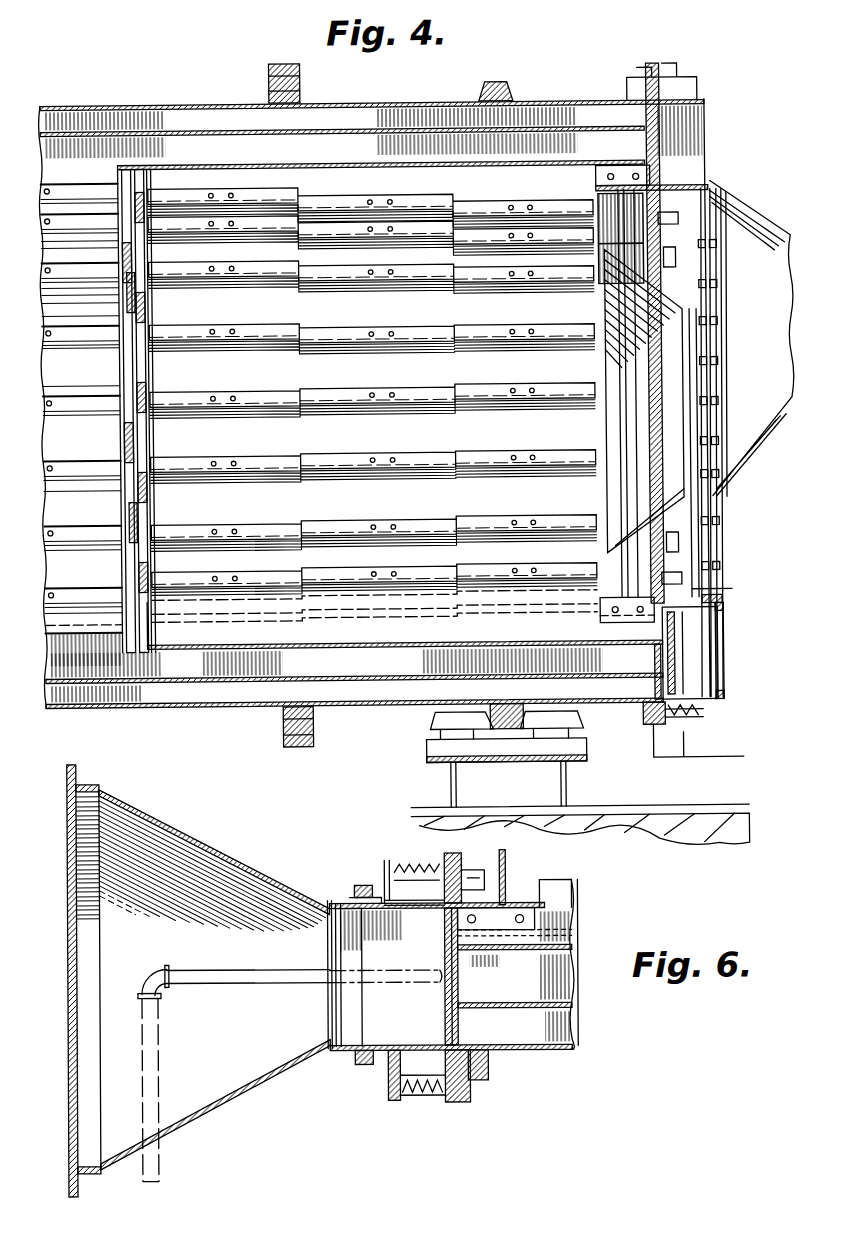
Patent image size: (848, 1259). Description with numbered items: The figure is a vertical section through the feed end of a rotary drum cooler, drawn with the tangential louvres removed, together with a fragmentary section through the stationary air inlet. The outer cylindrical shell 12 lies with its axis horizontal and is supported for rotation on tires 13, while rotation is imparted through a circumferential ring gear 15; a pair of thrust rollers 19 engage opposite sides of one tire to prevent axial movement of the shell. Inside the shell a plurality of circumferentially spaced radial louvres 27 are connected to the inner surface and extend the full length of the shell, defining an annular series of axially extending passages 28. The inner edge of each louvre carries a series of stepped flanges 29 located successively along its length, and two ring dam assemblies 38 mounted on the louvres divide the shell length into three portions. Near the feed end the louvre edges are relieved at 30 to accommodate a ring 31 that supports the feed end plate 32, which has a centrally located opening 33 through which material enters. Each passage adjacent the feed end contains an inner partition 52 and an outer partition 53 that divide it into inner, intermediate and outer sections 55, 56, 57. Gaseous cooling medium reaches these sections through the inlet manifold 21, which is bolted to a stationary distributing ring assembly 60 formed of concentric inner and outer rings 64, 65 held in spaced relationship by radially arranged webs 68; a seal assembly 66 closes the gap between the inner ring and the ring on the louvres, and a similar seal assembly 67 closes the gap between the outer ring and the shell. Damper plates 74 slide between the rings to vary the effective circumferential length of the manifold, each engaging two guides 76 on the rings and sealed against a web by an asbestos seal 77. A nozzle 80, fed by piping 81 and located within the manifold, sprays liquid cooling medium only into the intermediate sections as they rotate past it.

In FIG. 4, the outer cylindrical shell 12 is at (392, 100).
In FIG. 6, the outer cylindrical shell 12 is at (540, 1052).
In FIG. 4, the tires 13 is at (518, 90).
In FIG. 4, the circumferential ring gear 15 is at (300, 748).
In FIG. 4, the thrust rollers 19 is at (428, 720).
In FIG. 6, the inlet manifold 21 is at (218, 842).
In FIG. 4, the radial louvres 27 is at (490, 404).
In FIG. 6, the radial louvres 27 is at (578, 903).
In FIG. 4, the axially extending passages 28 is at (508, 669).
In FIG. 4, the stepped flanges 29 is at (552, 528).
In FIG. 4, the relieved portion 30 is at (598, 190).
In FIG. 6, the relieved portion 30 is at (550, 890).
In FIG. 4, the ring 31 is at (622, 180).
In FIG. 6, the ring 31 is at (500, 908).
In FIG. 4, the feed end plate 32 is at (614, 246).
In FIG. 6, the feed end plate 32 is at (508, 864).
In FIG. 4, the centrally located opening 33 is at (683, 464).
In FIG. 4, the ring dam assemblies 38 is at (155, 520).
In FIG. 4, the inner partition 52 is at (487, 643).
In FIG. 6, the inner partition 52 is at (578, 948).
In FIG. 4, the outer partition 53 is at (573, 678).
In FIG. 6, the outer partition 53 is at (578, 1014).
In FIG. 4, the inner section 55 is at (438, 636).
In FIG. 6, the inner section 55 is at (578, 926).
In FIG. 4, the intermediate section 56 is at (362, 669).
In FIG. 6, the intermediate section 56 is at (580, 978).
In FIG. 4, the outer section 57 is at (212, 705).
In FIG. 6, the outer section 57 is at (575, 1030).
In FIG. 4, the distributing ring assembly 60 is at (708, 100).
In FIG. 6, the distributing ring assembly 60 is at (372, 894).
In FIG. 4, the inner ring 64 is at (722, 622).
In FIG. 6, the inner ring 64 is at (385, 912).
In FIG. 4, the outer ring 65 is at (722, 697).
In FIG. 6, the outer ring 65 is at (380, 1045).
In FIG. 4, the seal assembly 66 is at (700, 600).
In FIG. 6, the seal assembly 66 is at (450, 860).
In FIG. 4, the seal assembly 67 is at (655, 722).
In FIG. 6, the seal assembly 67 is at (460, 1095).
In FIG. 4, the webs 68 is at (724, 654).
In FIG. 6, the webs 68 is at (75, 1170).
In FIG. 4, the damper plates 74 is at (672, 678).
In FIG. 4, the guides 76 is at (652, 650).
In FIG. 6, the guides 76 is at (446, 938).
In FIG. 4, the seal 77 is at (672, 652).
In FIG. 6, the nozzle 80 is at (404, 970).
In FIG. 6, the piping 81 is at (206, 985).